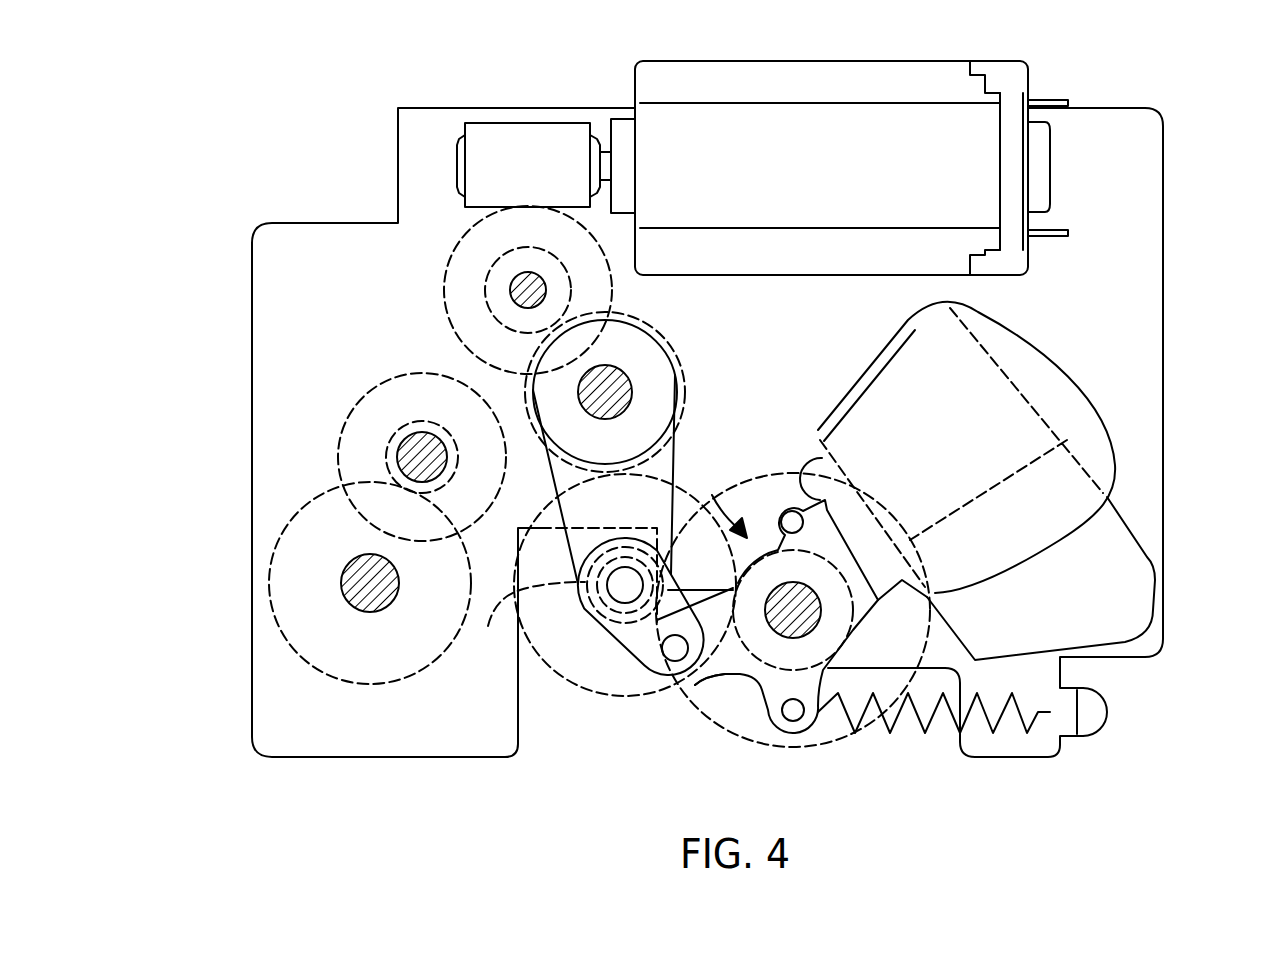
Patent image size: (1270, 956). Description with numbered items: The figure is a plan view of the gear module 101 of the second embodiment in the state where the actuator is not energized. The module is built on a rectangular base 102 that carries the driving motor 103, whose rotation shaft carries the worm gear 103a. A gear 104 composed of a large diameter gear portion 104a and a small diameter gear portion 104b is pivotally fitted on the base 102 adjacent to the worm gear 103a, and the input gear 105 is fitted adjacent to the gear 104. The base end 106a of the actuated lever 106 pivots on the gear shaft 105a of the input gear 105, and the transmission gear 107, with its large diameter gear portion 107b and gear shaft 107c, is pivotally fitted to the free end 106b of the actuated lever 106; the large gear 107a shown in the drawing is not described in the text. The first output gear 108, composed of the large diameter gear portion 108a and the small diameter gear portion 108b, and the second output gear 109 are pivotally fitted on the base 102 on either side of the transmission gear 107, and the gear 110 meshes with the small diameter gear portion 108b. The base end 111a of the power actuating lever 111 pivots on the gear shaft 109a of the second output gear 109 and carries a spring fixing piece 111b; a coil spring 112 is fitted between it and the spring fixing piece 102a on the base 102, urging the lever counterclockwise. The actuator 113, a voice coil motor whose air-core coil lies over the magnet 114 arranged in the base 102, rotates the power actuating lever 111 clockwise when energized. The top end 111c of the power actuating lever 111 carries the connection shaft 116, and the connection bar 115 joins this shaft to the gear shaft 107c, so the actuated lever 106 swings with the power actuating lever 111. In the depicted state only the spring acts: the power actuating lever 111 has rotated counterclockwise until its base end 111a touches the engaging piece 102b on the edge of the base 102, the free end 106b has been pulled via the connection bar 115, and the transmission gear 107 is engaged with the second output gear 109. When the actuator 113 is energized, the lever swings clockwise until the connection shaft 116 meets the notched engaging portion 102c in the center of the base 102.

The gear module 101 is at (1191, 197).
The rectangular base 102 is at (1148, 277).
The spring fixing piece 102a is at (1085, 736).
The engaging piece 102b is at (818, 466).
The notched engaging portion 102c is at (710, 588).
The driving motor 103 is at (886, 66).
The worm gear 103a is at (535, 136).
The gear 104 is at (447, 290).
The large diameter gear portion 104a is at (445, 245).
The small diameter gear portion 104b is at (480, 285).
The input gear 105 is at (641, 374).
The gear shaft 105a is at (627, 398).
The actuated lever 106 is at (608, 487).
The base end 106a is at (672, 355).
The free end 106b is at (542, 662).
The transmission gear 107 is at (625, 644).
The planet large gear 107a is at (572, 688).
The large diameter gear portion 107b is at (604, 645).
The gear shaft 107c is at (625, 573).
The first output gear 108 is at (384, 427).
The large diameter gear portion 108a is at (383, 383).
The small diameter gear portion 108b is at (390, 437).
The second output gear 109 is at (793, 642).
The gear shaft 109a is at (812, 622).
The gear 110 is at (272, 583).
The power actuating lever 111 is at (803, 600).
The base end 111a is at (778, 555).
The spring fixing piece 111b is at (797, 722).
The top end 111c is at (727, 668).
The coil spring 112 is at (897, 722).
The actuator 113 is at (1048, 388).
The magnet 114 is at (1137, 570).
The connection bar 115 is at (583, 610).
The connection shaft 116 is at (677, 663).